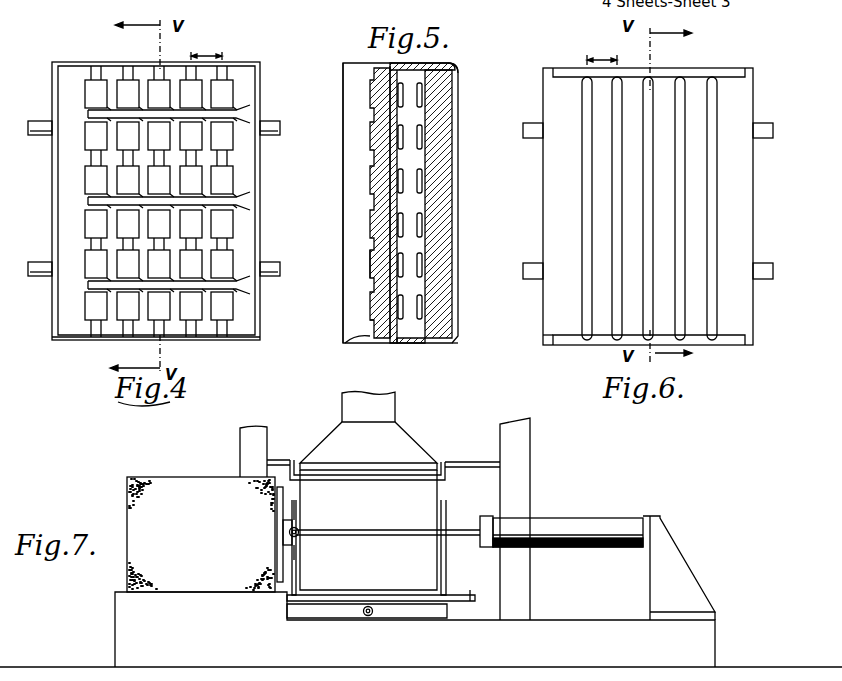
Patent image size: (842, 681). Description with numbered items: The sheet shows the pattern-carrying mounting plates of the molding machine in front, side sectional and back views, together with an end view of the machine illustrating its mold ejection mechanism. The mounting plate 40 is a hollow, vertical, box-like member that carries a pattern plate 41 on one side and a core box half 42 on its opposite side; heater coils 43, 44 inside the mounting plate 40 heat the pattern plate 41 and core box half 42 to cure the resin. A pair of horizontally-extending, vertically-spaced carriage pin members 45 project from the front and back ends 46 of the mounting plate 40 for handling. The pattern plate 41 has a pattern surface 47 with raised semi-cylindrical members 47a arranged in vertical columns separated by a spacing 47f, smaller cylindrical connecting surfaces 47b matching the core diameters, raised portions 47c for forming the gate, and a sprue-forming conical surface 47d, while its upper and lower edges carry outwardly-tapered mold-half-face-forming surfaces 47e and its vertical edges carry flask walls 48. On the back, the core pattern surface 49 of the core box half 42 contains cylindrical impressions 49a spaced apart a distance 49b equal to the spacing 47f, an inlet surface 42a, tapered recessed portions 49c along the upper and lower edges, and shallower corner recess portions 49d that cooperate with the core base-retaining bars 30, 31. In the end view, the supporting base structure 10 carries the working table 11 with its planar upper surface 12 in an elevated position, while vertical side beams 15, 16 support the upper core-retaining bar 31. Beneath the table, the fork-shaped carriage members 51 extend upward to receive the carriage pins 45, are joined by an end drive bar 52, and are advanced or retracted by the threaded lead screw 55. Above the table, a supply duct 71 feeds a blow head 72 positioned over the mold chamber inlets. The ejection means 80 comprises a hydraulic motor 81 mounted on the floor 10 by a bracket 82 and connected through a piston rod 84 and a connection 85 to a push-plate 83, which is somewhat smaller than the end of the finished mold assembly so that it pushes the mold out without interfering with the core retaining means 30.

In FIG. 7, the supporting base structure 10 is at (715, 645).
In FIG. 7, the working table member 11 is at (475, 600).
In FIG. 7, the upper surface 12 is at (472, 596).
In FIG. 7, the vertical side beam 15 is at (240, 457).
In FIG. 7, the vertical side beam 16 is at (530, 436).
In FIG. 7, the core base-retaining bar 30 is at (425, 590).
In FIG. 7, the upper core-retaining bar 31 is at (445, 480).
In FIG. 5, the mounting plate 40 is at (393, 343).
In FIG. 5, the pattern plate 41 is at (380, 343).
In FIG. 5, the core box half 42 is at (430, 343).
In FIG. 5, the inlet surface 42a is at (433, 67).
In FIG. 5, the heater coil 43 is at (405, 137).
In FIG. 5, the heater coil 44 is at (416, 193).
In FIG. 4, the carriage pin member 45 is at (265, 136).
In FIG. 6, the carriage pin member 45 is at (540, 138).
In FIG. 4, the front and back ends 46 is at (52, 334).
In FIG. 4, the pattern surface 47 is at (240, 320).
In FIG. 5, the pattern surface 47 is at (370, 318).
In FIG. 4, the raised semi-cylindrical member 47a is at (233, 262).
In FIG. 5, the raised semi-cylindrical member 47a is at (370, 260).
In FIG. 4, the cylindrical connecting surface 47b is at (229, 244).
In FIG. 4, the raised portions 47c is at (215, 197).
In FIG. 4, the sprue-forming conical surface 47d is at (246, 108).
In FIG. 4, the mold-half-face-forming surfaces 47e is at (228, 337).
In FIG. 5, the mold-half-face-forming surfaces 47e is at (345, 343).
In FIG. 4, the spacing 47f is at (207, 48).
In FIG. 4, the flask wall 48 is at (52, 84).
In FIG. 5, the flask wall 48 is at (343, 90).
In FIG. 5, the core pattern surface 49 is at (450, 327).
In FIG. 6, the core pattern surface 49 is at (553, 320).
In FIG. 6, the cylindrical impression 49a is at (688, 78).
In FIG. 6, the distance 49b is at (604, 54).
In FIG. 5, the recessed portions 49c is at (453, 343).
In FIG. 6, the recessed portions 49c is at (572, 340).
In FIG. 5, the corner recess portions 49d is at (455, 68).
In FIG. 6, the corner recess portions 49d is at (548, 345).
In FIG. 7, the carriage member 51 is at (296, 545).
In FIG. 7, the end drive bar 52 is at (447, 618).
In FIG. 7, the lead screw 55 is at (368, 616).
In FIG. 7, the supply duct 71 is at (396, 406).
In FIG. 7, the blow head 72 is at (415, 445).
In FIG. 7, the ejection means 80 is at (578, 512).
In FIG. 7, the hydraulic motor 81 is at (596, 548).
In FIG. 7, the bracket 82 is at (658, 537).
In FIG. 7, the push-plate 83 is at (283, 566).
In FIG. 7, the piston rod 84 is at (355, 530).
In FIG. 7, the connection 85 is at (297, 528).